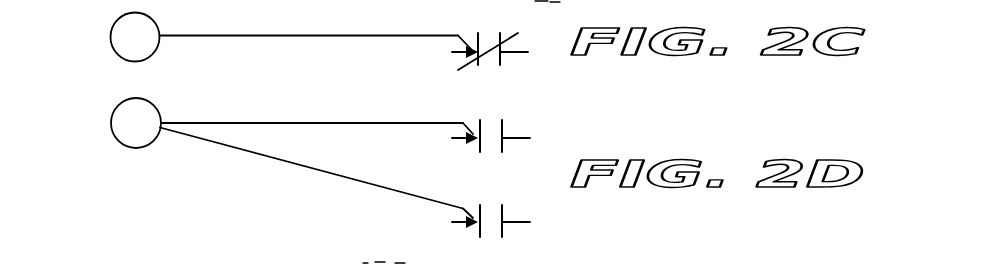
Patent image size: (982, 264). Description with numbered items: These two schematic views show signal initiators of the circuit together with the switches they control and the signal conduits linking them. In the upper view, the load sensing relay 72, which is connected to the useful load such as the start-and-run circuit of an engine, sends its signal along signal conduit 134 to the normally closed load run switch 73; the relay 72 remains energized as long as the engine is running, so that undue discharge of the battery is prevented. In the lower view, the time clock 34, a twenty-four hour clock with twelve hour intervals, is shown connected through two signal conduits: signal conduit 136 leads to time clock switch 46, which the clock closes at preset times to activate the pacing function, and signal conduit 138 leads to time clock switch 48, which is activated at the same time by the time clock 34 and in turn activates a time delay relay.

In FIG. 2C, the load sensing relay 72 is at (110, 30).
In FIG. 2C, the signal conduit 134 is at (312, 35).
In FIG. 2C, the load run switch 73 is at (500, 59).
In FIG. 2D, the time clock 34 is at (112, 115).
In FIG. 2D, the signal conduit 136 is at (333, 123).
In FIG. 2D, the signal conduit 138 is at (277, 160).
In FIG. 2D, the time clock switch 46 is at (503, 130).
In FIG. 2D, the time clock switch 48 is at (503, 213).